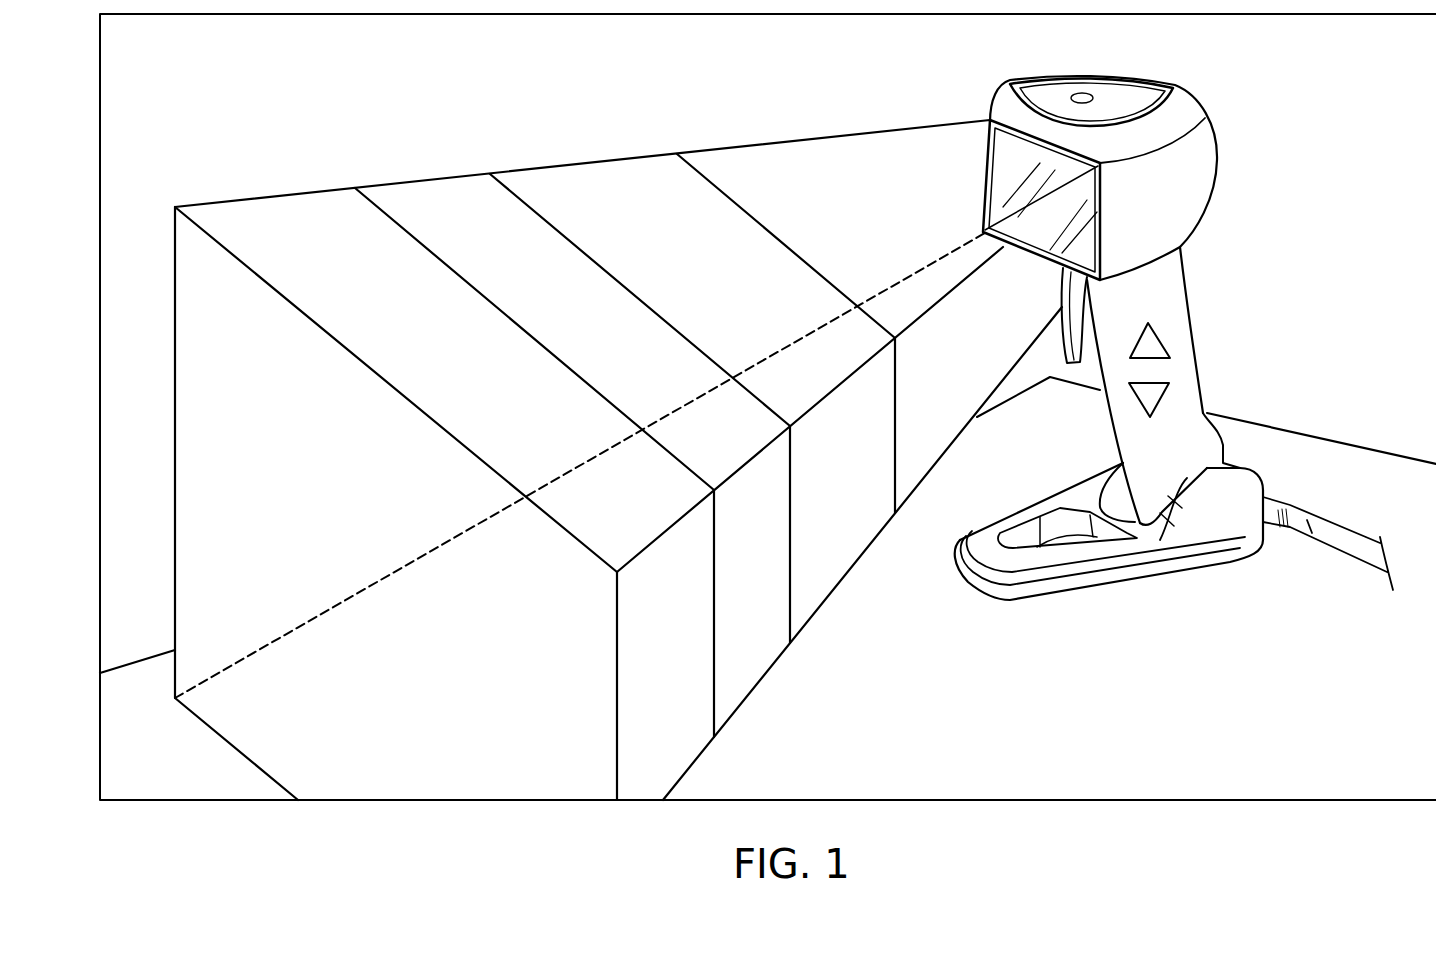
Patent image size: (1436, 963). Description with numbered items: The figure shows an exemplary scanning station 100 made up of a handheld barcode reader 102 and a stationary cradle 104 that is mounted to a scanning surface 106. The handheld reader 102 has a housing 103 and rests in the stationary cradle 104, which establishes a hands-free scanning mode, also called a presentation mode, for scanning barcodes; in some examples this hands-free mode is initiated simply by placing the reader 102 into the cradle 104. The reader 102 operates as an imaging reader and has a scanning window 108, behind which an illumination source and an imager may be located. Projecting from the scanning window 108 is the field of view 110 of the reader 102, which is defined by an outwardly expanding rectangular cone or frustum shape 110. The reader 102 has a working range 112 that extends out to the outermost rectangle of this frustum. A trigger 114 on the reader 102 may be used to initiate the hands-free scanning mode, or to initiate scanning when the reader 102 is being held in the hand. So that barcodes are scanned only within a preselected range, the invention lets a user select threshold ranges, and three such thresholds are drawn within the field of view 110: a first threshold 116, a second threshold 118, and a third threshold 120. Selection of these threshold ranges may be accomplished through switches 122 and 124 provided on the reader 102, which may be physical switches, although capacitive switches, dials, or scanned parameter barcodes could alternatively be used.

The scanning station 100 is at (1319, 137).
The handheld barcode reader 102 is at (1085, 78).
The housing 103 is at (1215, 162).
The stationary cradle 104 is at (1183, 540).
The scanning surface 106 is at (1343, 470).
The scanning window 108 is at (998, 178).
The field of view 110 is at (207, 176).
The working range 112 is at (273, 288).
The trigger 114 is at (1063, 332).
The first threshold 116 is at (773, 235).
The second threshold 118 is at (585, 253).
The third threshold 120 is at (450, 268).
The switch 122 is at (1160, 332).
The switch 124 is at (1143, 395).